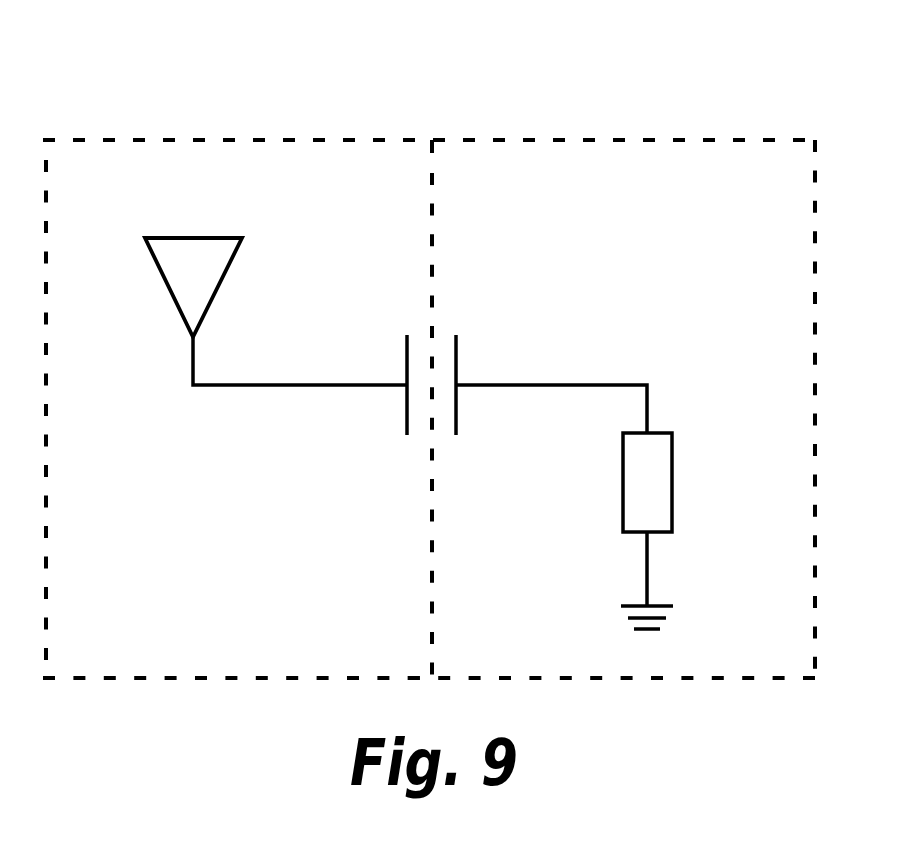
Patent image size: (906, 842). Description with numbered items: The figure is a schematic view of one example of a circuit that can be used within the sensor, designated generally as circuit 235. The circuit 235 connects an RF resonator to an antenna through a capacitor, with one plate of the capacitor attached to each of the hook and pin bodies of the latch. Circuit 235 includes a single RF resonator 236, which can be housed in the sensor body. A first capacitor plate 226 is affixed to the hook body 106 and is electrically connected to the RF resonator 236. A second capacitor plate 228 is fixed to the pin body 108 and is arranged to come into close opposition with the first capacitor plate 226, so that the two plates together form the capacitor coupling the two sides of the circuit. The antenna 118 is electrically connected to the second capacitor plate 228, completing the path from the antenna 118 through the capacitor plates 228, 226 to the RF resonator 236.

The circuit 235 is at (560, 68).
The pin body 108 is at (122, 667).
The hook body 106 is at (786, 671).
The antenna 118 is at (167, 237).
The second capacitor plate 228 is at (406, 353).
The first capacitor plate 226 is at (457, 353).
The RF resonator 236 is at (673, 455).